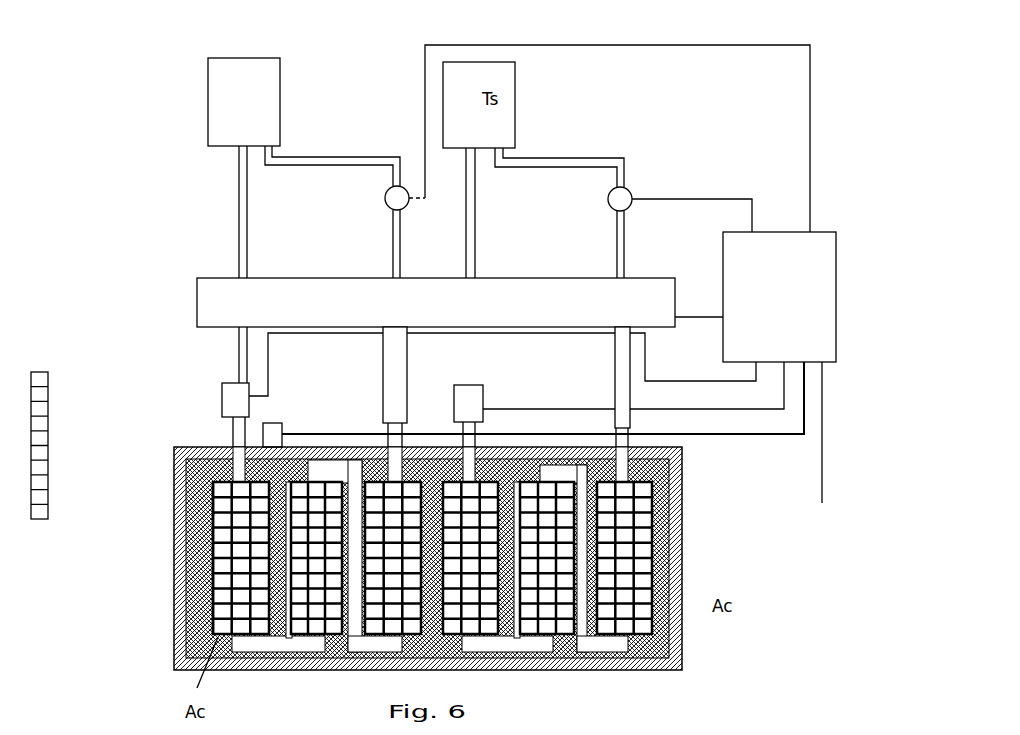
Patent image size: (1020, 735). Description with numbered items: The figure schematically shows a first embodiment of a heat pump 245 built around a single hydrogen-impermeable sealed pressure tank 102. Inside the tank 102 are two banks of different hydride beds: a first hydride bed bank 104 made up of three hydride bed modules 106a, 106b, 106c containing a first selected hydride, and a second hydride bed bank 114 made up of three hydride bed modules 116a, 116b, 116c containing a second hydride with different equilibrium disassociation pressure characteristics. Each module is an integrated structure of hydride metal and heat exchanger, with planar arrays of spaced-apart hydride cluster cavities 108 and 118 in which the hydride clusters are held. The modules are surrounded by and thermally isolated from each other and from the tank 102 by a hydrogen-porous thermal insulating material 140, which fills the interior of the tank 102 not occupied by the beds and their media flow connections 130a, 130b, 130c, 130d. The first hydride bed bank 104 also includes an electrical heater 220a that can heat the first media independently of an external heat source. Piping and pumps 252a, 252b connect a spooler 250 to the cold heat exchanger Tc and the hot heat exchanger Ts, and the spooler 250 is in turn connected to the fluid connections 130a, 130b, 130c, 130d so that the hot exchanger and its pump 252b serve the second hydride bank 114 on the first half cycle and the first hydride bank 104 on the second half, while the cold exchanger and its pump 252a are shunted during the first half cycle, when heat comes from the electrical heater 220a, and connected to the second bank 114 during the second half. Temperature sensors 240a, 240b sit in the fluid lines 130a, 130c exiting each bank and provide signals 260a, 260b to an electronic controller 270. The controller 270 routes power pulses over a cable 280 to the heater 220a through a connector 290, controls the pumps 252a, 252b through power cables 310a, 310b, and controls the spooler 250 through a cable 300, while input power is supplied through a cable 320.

The pressure tank 102 is at (430, 568).
The first hydride bed bank 104 is at (250, 581).
The hydride bed module 106a is at (322, 473).
The hydride bed module 106b is at (358, 482).
The hydride bed module 106c is at (213, 483).
The hydride cluster cavities 108 is at (365, 583).
The second hydride bed bank 114 is at (612, 592).
The hydride bed module 116a is at (548, 472).
The hydride bed module 116b is at (540, 478).
The hydride bed module 116c is at (585, 484).
The hydride cluster cavities 118 is at (463, 577).
The media flow connection 130a is at (247, 427).
The media flow connection 130b is at (383, 432).
The media flow connection 130c is at (477, 430).
The media flow connection 130d is at (615, 430).
The thermal insulating material 140 is at (433, 478).
The electrical heater 220a is at (213, 500).
The temperature sensor 240a is at (223, 383).
The temperature sensor 240b is at (483, 385).
The heat pump 245 is at (190, 126).
The spooler 250 is at (198, 277).
The pump 252a is at (385, 207).
The pump 252b is at (610, 208).
The signal 260a is at (758, 373).
The signal 260b is at (784, 389).
The electronic controller 270 is at (837, 285).
The cable 280 is at (773, 437).
The connector 290 is at (283, 423).
The cable 300 is at (699, 299).
The power cable 310a is at (622, 45).
The power cable 310b is at (673, 195).
The cable 320 is at (823, 470).